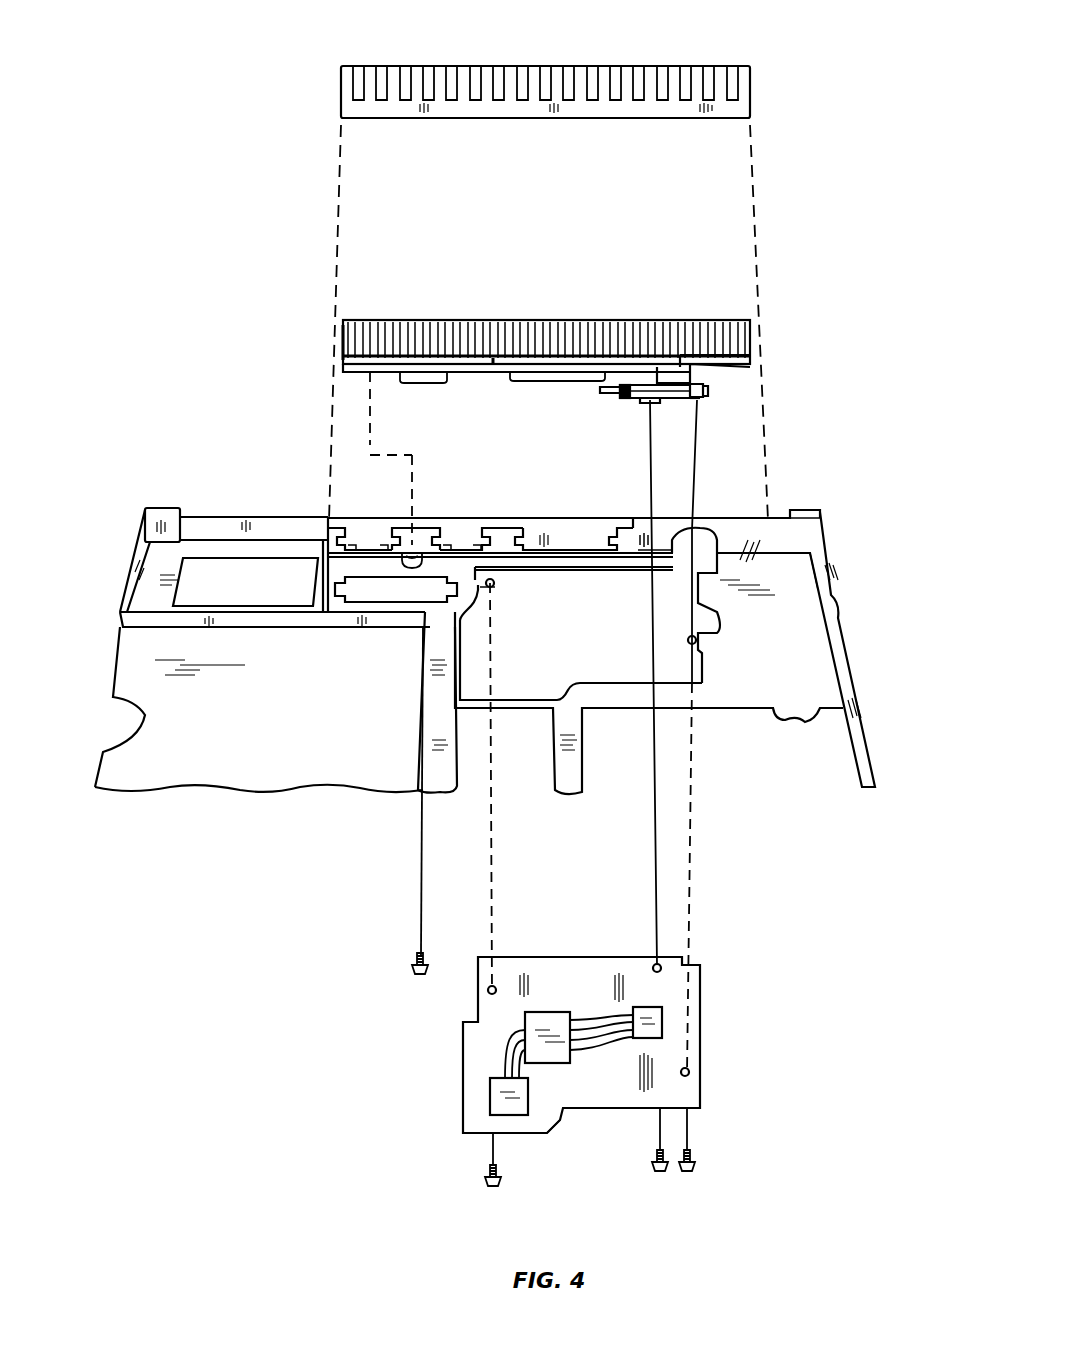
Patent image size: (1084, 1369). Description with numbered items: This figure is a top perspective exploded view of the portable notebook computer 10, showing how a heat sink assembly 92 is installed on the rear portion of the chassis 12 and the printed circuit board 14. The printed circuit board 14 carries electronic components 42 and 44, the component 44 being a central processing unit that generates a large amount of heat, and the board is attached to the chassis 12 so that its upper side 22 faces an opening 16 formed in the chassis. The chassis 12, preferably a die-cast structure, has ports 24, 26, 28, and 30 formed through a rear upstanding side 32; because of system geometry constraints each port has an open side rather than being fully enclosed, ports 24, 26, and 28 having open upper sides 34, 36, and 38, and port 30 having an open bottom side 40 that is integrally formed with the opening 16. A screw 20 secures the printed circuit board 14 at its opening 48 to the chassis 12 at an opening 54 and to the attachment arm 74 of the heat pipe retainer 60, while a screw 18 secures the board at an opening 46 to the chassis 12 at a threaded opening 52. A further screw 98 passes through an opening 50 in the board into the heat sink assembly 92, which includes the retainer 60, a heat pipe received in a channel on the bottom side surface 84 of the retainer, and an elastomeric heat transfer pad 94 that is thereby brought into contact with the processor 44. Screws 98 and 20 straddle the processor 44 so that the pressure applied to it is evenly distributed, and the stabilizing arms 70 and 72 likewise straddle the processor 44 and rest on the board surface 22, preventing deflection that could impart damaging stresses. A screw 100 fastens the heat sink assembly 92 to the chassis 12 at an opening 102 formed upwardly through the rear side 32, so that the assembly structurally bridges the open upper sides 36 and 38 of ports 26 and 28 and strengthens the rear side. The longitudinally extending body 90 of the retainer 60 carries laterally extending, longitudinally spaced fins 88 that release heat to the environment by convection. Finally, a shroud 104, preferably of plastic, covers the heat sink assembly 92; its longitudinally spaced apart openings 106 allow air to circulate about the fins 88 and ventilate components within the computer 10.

The portable notebook computer 10 is at (885, 292).
The chassis 12 is at (132, 552).
The printed circuit board 14 is at (460, 1058).
The opening 16 is at (516, 643).
The screw 18 is at (488, 1175).
The screw 20 is at (697, 1160).
The upper side 22 is at (580, 1082).
The port 24 is at (349, 538).
The port 26 is at (463, 529).
The port 28 is at (556, 540).
The port 30 is at (690, 535).
The rear upstanding side 32 is at (742, 533).
The open upper side 34 is at (380, 526).
The open upper side 36 is at (455, 528).
The open upper side 38 is at (588, 536).
The open bottom side 40 is at (696, 572).
The electronic component 42 is at (551, 1010).
The central processing unit 44 is at (664, 1022).
The opening 46 is at (495, 986).
The opening 48 is at (690, 1072).
The opening 50 is at (660, 964).
The threaded opening 52 is at (496, 585).
The opening 54 is at (687, 642).
The heat pipe retainer 60 is at (506, 316).
The stabilizing arm 70 is at (603, 390).
The stabilizing arm 72 is at (708, 396).
The attachment arm 74 is at (706, 388).
The bottom side surface 84 is at (496, 366).
The fins 88 is at (418, 318).
The body 90 is at (346, 344).
The heat sink assembly 92 is at (689, 318).
The elastomeric heat transfer pad 94 is at (632, 400).
The screw 98 is at (656, 1170).
The screw 100 is at (414, 963).
The opening 102 is at (412, 546).
The shroud 104 is at (343, 62).
The openings 106 is at (403, 76).